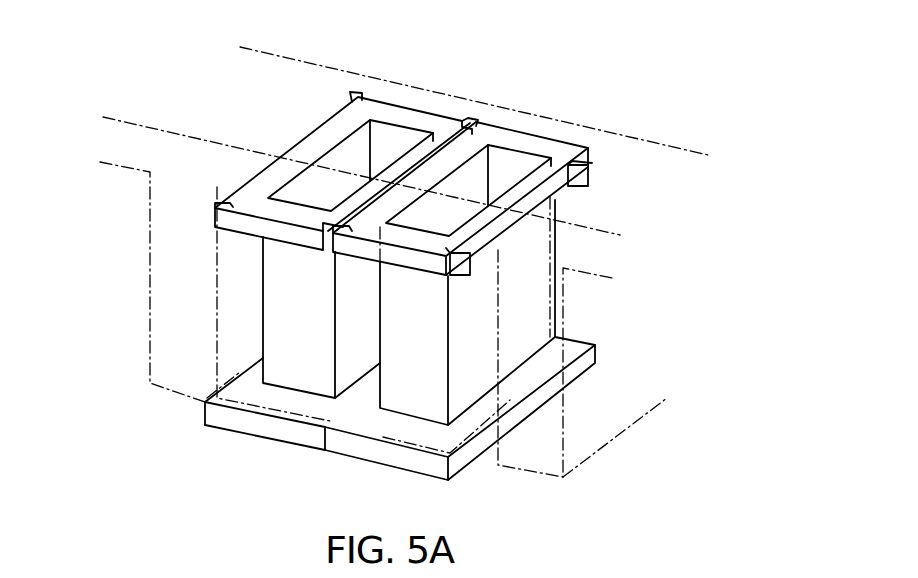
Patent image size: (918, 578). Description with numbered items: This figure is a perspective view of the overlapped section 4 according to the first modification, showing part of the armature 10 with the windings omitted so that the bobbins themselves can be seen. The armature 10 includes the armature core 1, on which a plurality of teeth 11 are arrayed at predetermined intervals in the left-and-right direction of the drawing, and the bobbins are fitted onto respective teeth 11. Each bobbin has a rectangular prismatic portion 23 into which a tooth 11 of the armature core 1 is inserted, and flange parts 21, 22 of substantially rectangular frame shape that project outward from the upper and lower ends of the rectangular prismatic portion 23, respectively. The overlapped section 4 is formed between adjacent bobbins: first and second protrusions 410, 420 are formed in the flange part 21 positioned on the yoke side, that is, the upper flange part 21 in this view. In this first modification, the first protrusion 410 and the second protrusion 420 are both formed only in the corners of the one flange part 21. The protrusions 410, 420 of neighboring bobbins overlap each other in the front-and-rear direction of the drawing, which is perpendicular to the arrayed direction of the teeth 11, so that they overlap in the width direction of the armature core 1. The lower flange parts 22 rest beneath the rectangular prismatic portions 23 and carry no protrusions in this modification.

The armature 10 is at (663, 76).
The armature core 1 is at (628, 147).
The teeth 11 is at (150, 257).
The flange part 21 is at (388, 112).
The flange part 22 is at (298, 435).
The rectangular prismatic portion 23 is at (262, 303).
The overlapped section 4 is at (480, 112).
The first protrusion 410 is at (356, 94).
The second protrusion 420 is at (466, 121).